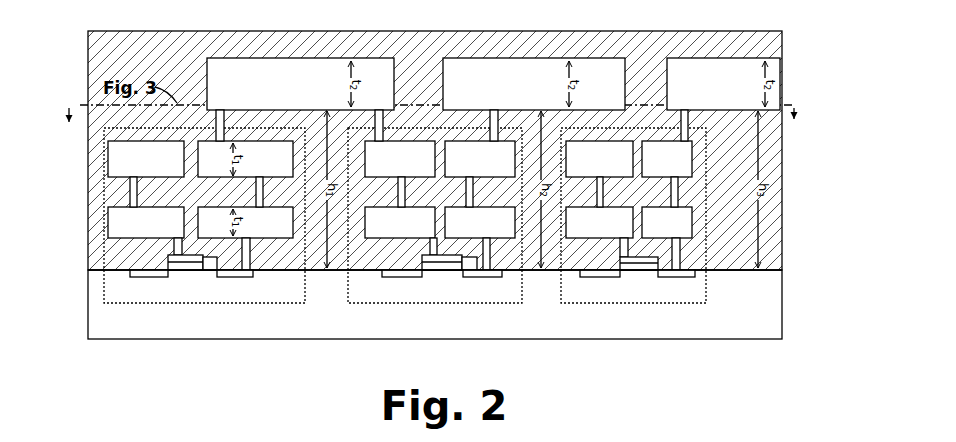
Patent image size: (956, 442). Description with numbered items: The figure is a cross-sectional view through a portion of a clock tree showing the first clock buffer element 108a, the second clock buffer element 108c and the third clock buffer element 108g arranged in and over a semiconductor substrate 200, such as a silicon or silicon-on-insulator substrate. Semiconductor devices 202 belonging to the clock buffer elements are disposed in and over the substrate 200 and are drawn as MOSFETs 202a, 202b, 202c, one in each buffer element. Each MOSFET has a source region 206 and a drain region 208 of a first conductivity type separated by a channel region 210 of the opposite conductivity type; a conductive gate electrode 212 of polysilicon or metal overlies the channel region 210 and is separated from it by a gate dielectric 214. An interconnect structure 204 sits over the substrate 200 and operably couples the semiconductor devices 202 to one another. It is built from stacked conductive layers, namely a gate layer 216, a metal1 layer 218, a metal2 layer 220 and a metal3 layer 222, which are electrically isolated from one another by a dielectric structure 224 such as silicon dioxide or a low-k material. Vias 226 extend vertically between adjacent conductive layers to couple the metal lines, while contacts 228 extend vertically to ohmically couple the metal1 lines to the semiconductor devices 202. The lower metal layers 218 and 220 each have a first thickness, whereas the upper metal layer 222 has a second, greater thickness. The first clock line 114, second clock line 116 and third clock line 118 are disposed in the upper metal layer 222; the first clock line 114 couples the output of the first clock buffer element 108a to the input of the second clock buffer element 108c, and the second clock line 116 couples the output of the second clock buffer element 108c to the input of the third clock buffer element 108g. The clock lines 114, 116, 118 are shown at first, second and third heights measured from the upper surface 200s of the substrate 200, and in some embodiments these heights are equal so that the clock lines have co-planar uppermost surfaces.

The dielectric structure 224 is at (95, 60).
The semiconductor substrate 200 is at (807, 337).
The upper surface of the semiconductor substrate 200s is at (712, 268).
The first clock line 114 is at (215, 58).
The second clock line 116 is at (455, 58).
The third clock line 118 is at (685, 58).
The first clock buffer element 108a is at (208, 303).
The second clock buffer element 108c is at (448, 303).
The third clock buffer element 108g is at (638, 303).
The vias 226 is at (214, 125).
The contacts 228 is at (493, 254).
The conductive gate electrodes 212 is at (172, 259).
The gate dielectrics 214 is at (205, 257).
The source regions 206 is at (165, 278).
The drain regions 208 is at (236, 278).
The channel regions 210 is at (196, 273).
The semiconductor devices 202 is at (74, 255).
The first MOSFET 202a is at (253, 261).
The second MOSFET 202b is at (405, 258).
The third MOSFET 202c is at (612, 258).
The metal3 layer 222 is at (807, 127).
The metal2 layer 220 is at (807, 185).
The metal1 layer 218 is at (807, 202).
The gate layer 216 is at (807, 245).
The interconnect structure 204 is at (846, 43).